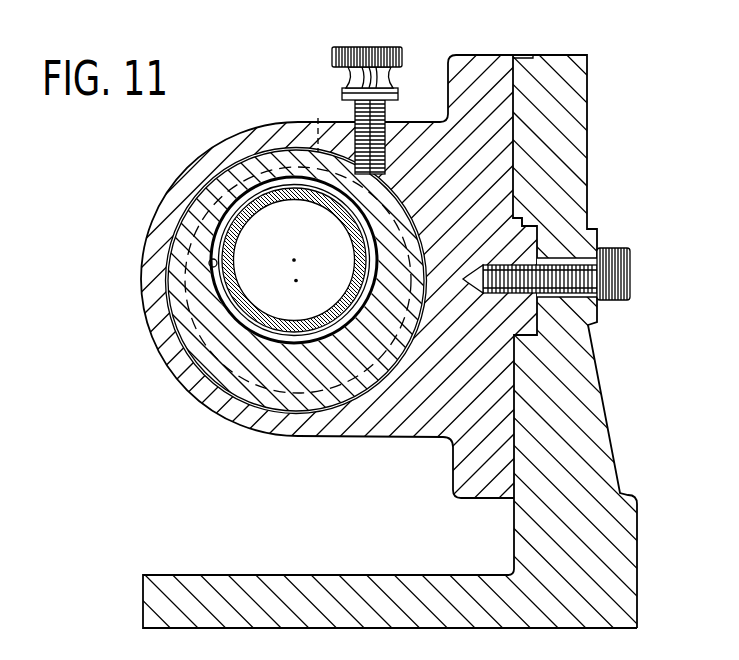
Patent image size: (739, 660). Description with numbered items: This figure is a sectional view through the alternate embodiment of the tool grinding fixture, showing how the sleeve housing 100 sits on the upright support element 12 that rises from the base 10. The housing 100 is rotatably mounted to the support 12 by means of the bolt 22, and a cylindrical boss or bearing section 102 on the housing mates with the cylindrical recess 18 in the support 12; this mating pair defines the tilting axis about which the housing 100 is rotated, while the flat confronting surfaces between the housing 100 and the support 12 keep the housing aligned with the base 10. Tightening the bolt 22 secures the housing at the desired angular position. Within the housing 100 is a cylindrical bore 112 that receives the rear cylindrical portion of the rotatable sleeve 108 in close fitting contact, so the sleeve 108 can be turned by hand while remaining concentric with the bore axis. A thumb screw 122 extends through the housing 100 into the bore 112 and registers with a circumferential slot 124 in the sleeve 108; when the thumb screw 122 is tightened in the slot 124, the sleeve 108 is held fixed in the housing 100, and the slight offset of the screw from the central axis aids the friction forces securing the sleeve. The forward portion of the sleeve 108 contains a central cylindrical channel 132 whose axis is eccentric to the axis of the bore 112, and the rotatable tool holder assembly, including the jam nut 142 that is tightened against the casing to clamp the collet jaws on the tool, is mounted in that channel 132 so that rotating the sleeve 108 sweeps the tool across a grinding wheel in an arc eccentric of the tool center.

The base 10 is at (305, 573).
The support element 12 is at (556, 115).
The cylindrical recess 18 is at (522, 224).
The bolt 22 is at (612, 249).
The sleeve housing 100 is at (262, 119).
The cylindrical boss or bearing section 102 is at (518, 338).
The rotatable sleeve 108 is at (220, 338).
The cylindrical bore 112 is at (222, 182).
The thumb screw 122 is at (373, 46).
The circumferential slot 124 is at (318, 118).
The central cylindrical channel 132 is at (209, 263).
The jam nut 142 is at (232, 237).